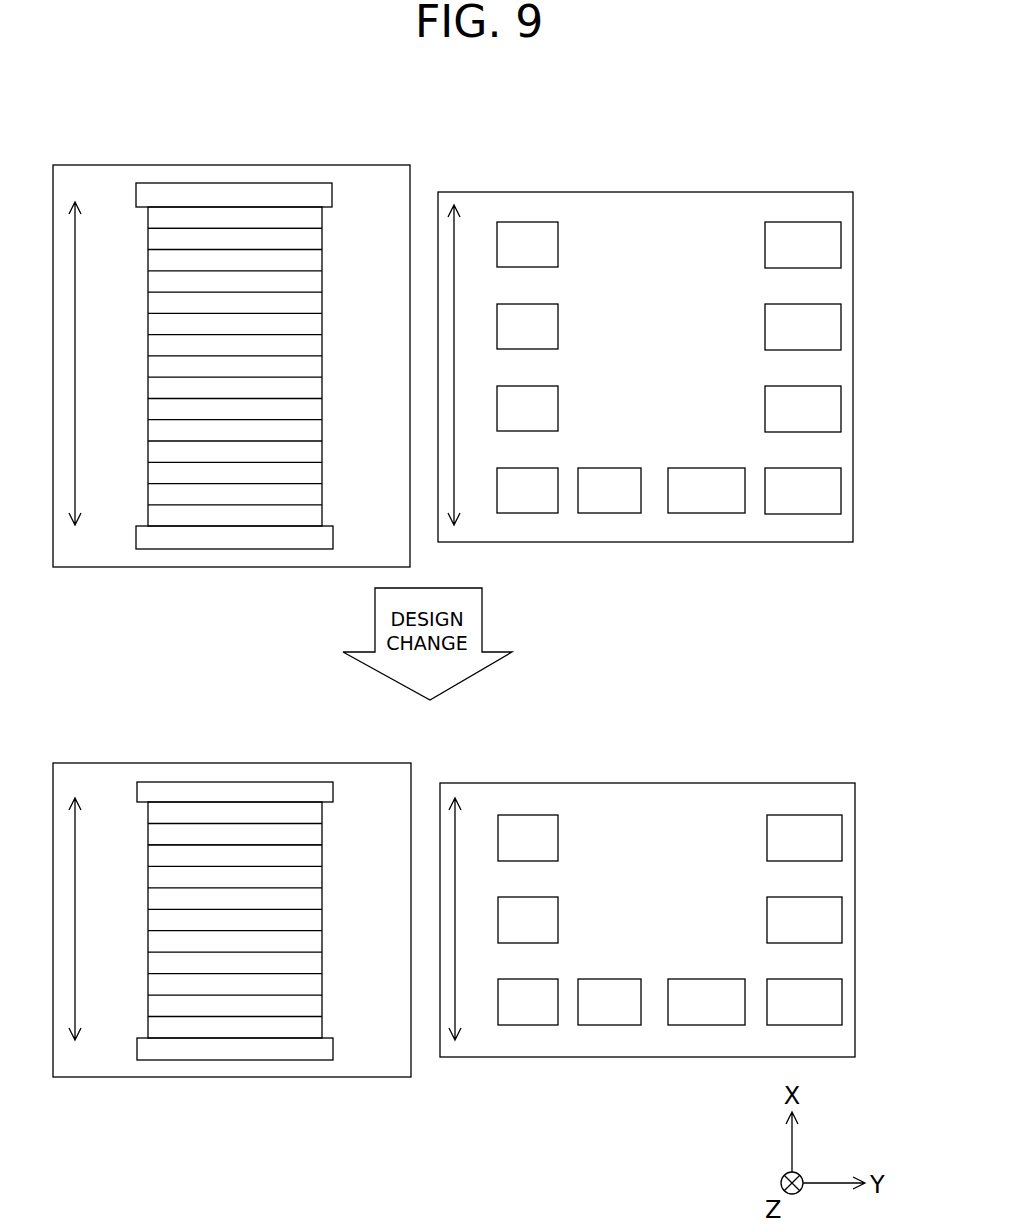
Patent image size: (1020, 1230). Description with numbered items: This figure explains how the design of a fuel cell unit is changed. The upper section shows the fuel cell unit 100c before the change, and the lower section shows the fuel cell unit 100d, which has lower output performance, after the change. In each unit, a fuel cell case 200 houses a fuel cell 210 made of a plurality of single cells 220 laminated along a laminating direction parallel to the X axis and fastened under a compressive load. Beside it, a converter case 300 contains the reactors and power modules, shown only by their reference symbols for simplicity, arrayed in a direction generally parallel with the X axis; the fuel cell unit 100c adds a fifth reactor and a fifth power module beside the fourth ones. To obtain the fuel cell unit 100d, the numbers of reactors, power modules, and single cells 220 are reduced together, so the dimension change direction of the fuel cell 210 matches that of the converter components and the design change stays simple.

The fuel cell unit 100c is at (857, 153).
The fuel cell unit 100d is at (857, 743).
The fuel cell case 200 is at (362, 165).
The fuel cell 210 is at (332, 210).
The single cell 220 is at (150, 242).
The converter case 300 is at (720, 192).